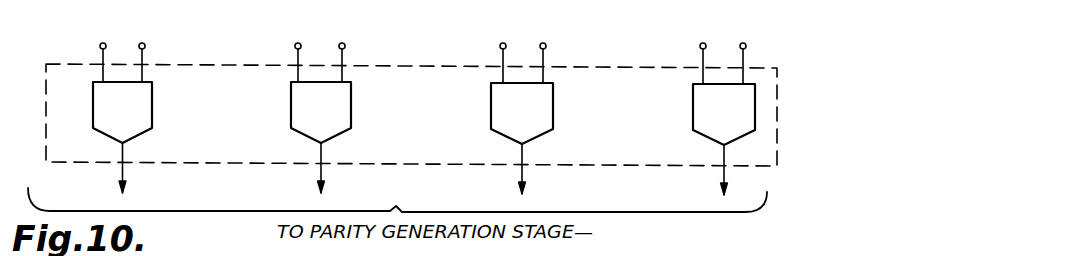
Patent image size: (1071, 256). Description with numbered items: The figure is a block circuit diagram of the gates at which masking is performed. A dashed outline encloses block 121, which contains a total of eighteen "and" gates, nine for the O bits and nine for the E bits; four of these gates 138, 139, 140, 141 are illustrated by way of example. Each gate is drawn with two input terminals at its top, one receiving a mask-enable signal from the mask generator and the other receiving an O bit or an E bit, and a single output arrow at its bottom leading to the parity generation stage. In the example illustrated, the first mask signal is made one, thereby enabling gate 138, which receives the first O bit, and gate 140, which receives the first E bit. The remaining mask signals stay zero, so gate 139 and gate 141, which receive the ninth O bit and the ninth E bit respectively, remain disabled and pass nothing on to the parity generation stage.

The block of "and" gates 121 is at (632, 24).
The "and" gate 138 is at (153, 102).
The "and" gate 139 is at (353, 107).
The "and" gate 140 is at (555, 100).
The "and" gate 141 is at (692, 98).